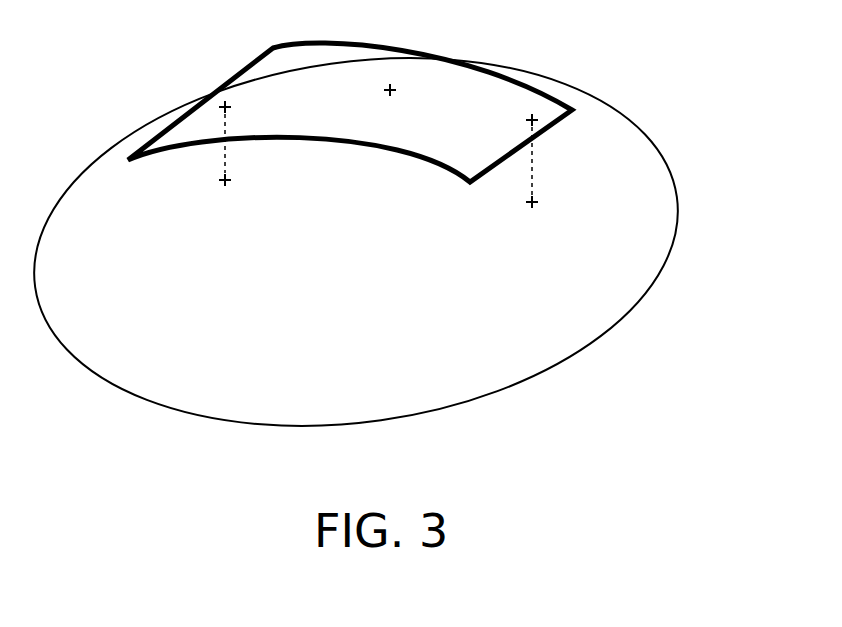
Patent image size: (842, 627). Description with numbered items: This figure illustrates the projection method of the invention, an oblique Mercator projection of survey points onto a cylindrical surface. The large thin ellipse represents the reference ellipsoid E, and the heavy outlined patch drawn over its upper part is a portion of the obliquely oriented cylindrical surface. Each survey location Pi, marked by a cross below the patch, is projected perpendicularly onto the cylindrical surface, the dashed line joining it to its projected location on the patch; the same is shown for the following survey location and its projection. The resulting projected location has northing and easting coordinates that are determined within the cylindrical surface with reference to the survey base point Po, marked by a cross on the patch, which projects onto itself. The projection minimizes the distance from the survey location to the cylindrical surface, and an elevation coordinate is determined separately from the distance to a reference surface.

The ellipsoid E is at (675, 175).
The survey location Pi is at (239, 180).
The survey base point Po is at (408, 79).